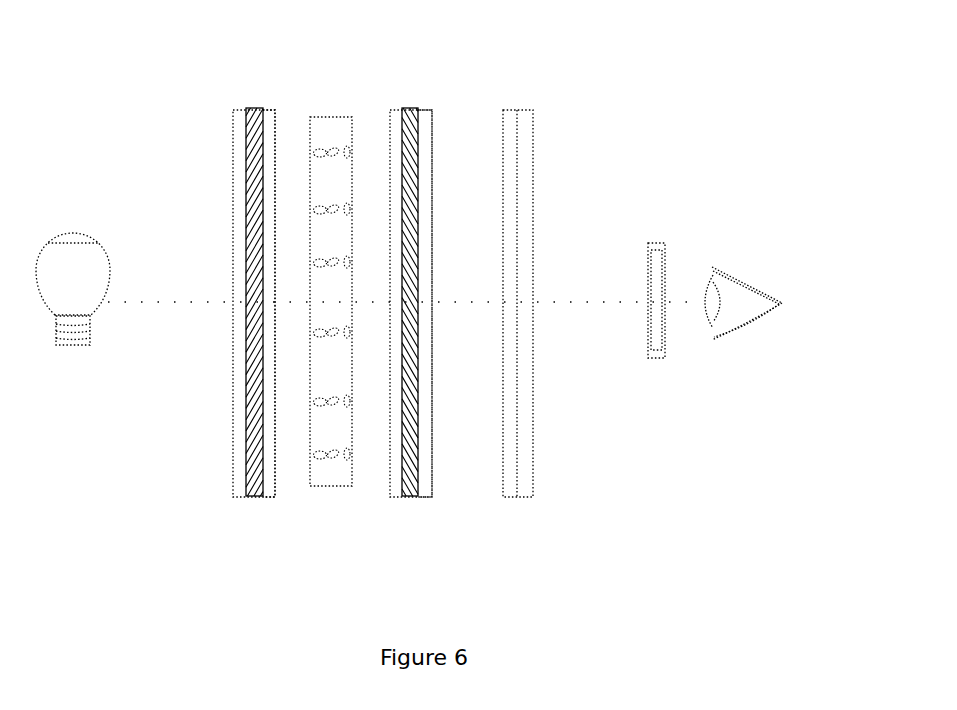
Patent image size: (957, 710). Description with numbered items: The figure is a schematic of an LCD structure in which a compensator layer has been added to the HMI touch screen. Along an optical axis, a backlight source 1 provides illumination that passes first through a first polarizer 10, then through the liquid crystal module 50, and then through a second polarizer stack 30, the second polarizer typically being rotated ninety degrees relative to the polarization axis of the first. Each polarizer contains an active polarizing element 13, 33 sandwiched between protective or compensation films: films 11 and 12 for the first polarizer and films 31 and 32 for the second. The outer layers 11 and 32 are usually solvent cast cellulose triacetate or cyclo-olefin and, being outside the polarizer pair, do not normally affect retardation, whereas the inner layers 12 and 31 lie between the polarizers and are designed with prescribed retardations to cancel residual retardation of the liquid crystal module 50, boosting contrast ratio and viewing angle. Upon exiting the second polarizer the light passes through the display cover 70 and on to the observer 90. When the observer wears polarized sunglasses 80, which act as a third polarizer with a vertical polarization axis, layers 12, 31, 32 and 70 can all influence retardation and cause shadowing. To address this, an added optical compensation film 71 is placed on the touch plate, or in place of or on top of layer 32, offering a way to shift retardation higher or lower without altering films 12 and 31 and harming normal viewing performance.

The backlight source 1 is at (82, 232).
The first polarizer 10 is at (252, 286).
The protective film 11 is at (233, 110).
The compensation film 12 is at (272, 110).
The active polarizing element 13 is at (253, 108).
The liquid crystal module 50 is at (332, 117).
The second polarizer stack 30 is at (407, 284).
The compensation film 31 is at (393, 110).
The protective film 32 is at (425, 110).
The active polarizing element 33 is at (410, 108).
The display cover 70 is at (516, 276).
The optical compensation film 71 is at (523, 110).
The polarized sunglasses 80 is at (652, 243).
The observer 90 is at (720, 273).